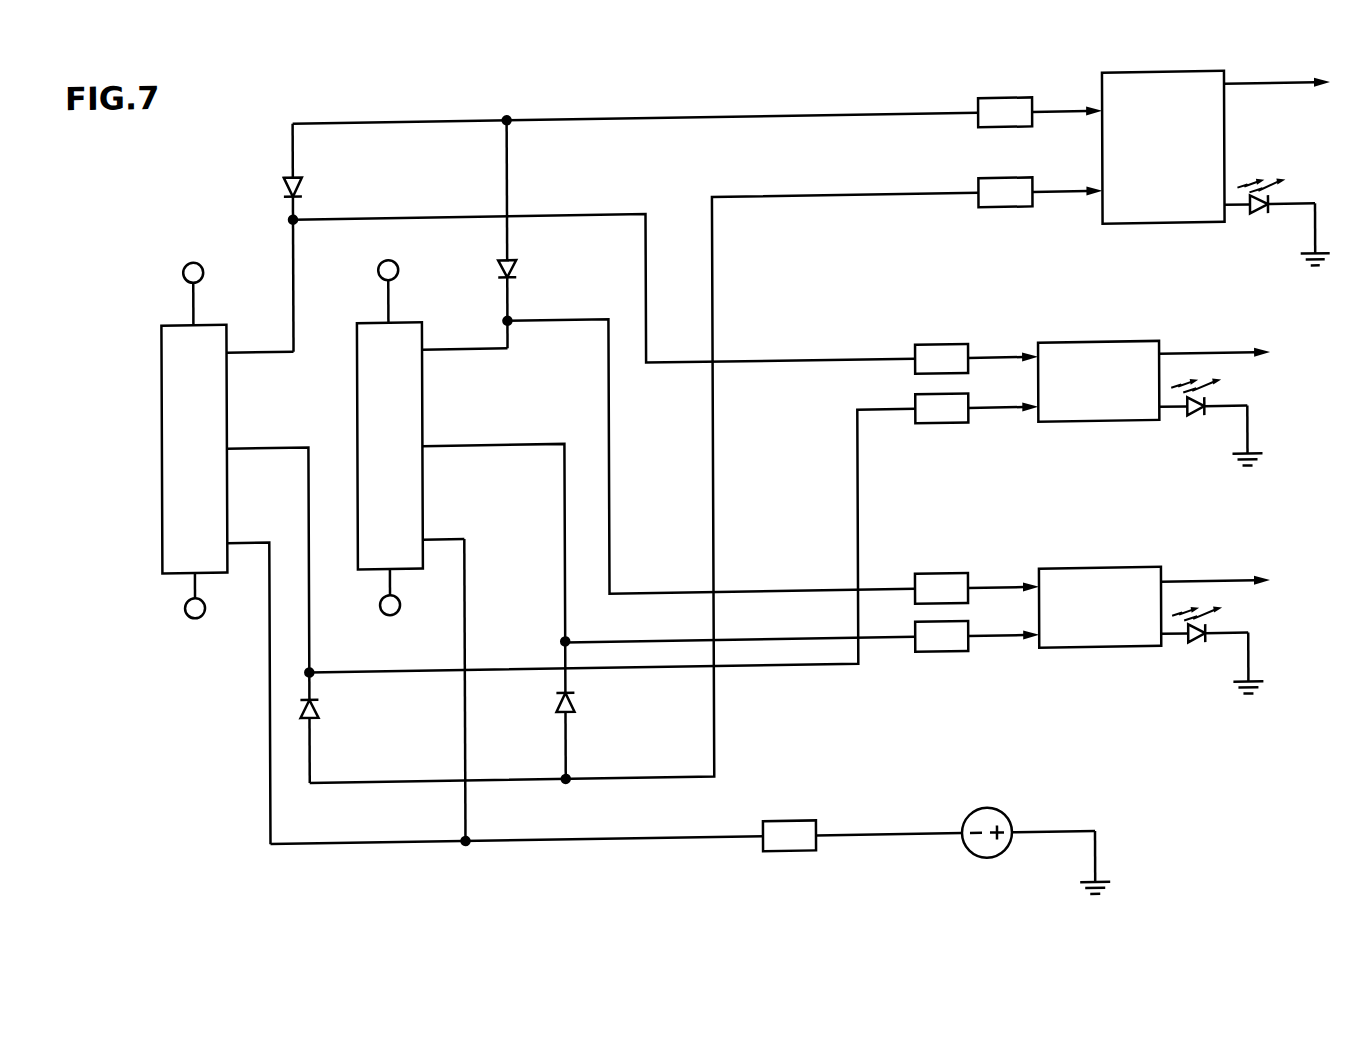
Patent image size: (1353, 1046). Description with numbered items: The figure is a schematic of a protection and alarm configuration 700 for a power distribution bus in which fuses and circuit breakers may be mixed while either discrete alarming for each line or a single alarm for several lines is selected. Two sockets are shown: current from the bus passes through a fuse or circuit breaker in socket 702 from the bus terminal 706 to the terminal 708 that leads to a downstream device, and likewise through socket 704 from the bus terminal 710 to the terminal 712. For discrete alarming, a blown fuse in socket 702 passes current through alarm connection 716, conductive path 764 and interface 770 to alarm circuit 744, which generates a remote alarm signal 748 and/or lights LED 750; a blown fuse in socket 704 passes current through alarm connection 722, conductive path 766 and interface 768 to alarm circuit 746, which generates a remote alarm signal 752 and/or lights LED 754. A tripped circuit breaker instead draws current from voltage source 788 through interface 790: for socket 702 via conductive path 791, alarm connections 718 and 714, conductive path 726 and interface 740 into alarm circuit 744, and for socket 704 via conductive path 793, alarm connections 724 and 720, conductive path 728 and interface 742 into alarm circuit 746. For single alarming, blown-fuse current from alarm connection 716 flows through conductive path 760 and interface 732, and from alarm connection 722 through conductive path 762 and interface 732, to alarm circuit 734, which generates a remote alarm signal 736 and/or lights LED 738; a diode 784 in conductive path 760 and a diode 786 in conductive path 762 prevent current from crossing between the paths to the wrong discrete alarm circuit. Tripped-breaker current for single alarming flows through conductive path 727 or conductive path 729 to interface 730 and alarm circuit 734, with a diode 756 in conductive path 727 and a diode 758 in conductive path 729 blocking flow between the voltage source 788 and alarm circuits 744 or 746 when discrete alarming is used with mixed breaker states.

The protection and alarm configuration 700 is at (185, 753).
The socket 702 is at (164, 503).
The socket 704 is at (359, 368).
The bus terminal 706 is at (200, 257).
The terminal 708 is at (205, 606).
The bus terminal 710 is at (398, 264).
The terminal 712 is at (400, 604).
The alarm connection 714 is at (240, 346).
The alarm connection 716 is at (248, 442).
The alarm connection 718 is at (248, 538).
The alarm connection 720 is at (436, 348).
The alarm connection 722 is at (442, 444).
The alarm connection 724 is at (442, 538).
The conductive path 726 is at (390, 214).
The conductive path 727 is at (392, 119).
The conductive path 728 is at (560, 320).
The conductive path 729 is at (512, 186).
The interface 730 is at (1008, 107).
The interface 732 is at (1008, 187).
The alarm circuit 734 is at (1178, 83).
The remote alarm signal 736 is at (1265, 96).
The LED 738 is at (1262, 231).
The interface 740 is at (943, 352).
The interface 742 is at (943, 580).
The alarm circuit 744 is at (1115, 352).
The alarm circuit 746 is at (1115, 582).
The remote alarm signal 748 is at (1200, 365).
The LED 750 is at (1198, 434).
The remote alarm signal 752 is at (1200, 595).
The LED 754 is at (1200, 662).
The diode 756 is at (305, 168).
The diode 758 is at (520, 263).
The conductive path 760 is at (393, 779).
The conductive path 762 is at (570, 747).
The conductive path 764 is at (355, 670).
The conductive path 766 is at (638, 643).
The interface 768 is at (943, 661).
The interface 770 is at (943, 431).
The diode 784 is at (325, 708).
The diode 786 is at (580, 700).
The voltage source 788 is at (970, 865).
The interface 790 is at (792, 823).
The conductive path 791 is at (340, 840).
The conductive path 793 is at (468, 730).